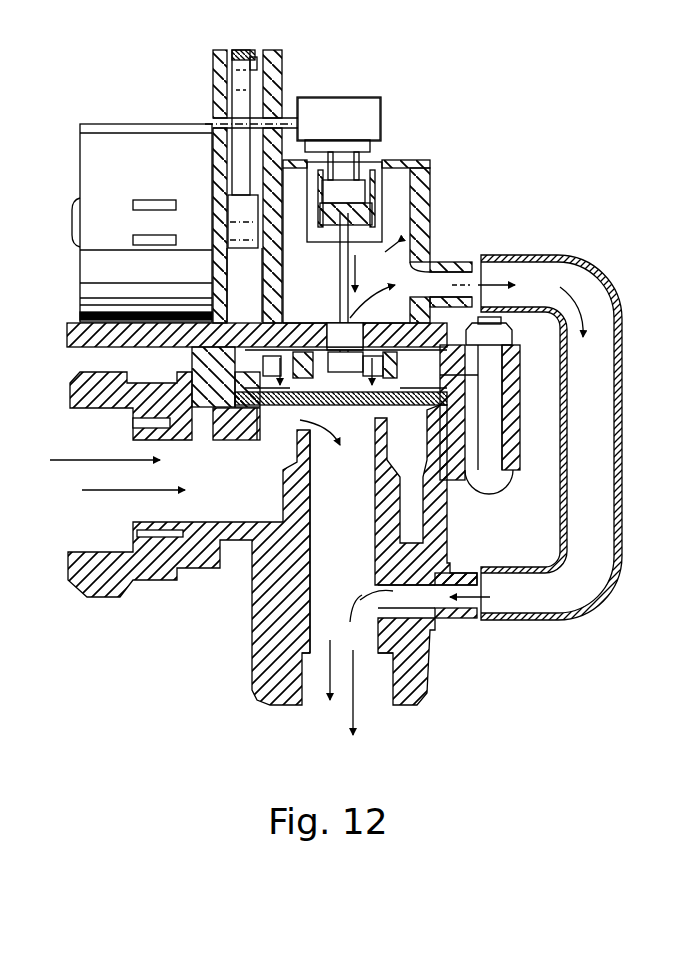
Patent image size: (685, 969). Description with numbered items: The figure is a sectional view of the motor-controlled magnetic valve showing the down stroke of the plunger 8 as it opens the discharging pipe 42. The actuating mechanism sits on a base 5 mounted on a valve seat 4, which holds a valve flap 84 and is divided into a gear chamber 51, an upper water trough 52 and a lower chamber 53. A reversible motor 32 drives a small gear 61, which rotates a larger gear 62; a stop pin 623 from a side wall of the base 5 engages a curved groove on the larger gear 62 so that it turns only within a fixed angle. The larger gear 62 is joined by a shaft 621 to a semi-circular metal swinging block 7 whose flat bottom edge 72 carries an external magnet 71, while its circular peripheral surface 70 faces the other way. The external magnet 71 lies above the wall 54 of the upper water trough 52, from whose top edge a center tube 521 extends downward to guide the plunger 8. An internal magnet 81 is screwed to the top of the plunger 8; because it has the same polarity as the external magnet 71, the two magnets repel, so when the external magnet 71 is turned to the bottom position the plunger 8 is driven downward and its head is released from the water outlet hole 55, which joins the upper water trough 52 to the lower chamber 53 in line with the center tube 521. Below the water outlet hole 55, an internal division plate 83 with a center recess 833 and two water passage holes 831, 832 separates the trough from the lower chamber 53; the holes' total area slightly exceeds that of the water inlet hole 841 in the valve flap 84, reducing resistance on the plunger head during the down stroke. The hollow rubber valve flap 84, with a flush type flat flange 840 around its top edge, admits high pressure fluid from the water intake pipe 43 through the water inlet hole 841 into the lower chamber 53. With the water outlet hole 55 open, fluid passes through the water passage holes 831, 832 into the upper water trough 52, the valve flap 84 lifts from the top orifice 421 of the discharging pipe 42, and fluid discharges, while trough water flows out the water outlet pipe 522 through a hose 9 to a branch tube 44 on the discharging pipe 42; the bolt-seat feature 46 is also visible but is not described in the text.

The motor 32 is at (110, 153).
The small gear 61 is at (205, 197).
The larger gear 62 is at (238, 83).
The stop pin 623 is at (256, 52).
The gear chamber 51 is at (290, 62).
The shaft 621 is at (332, 108).
The circular peripheral surface 70 is at (348, 100).
The swinging block 7 is at (383, 102).
The flat bottom edge 72 is at (370, 147).
The external magnet 71 is at (360, 152).
The wall 54 is at (397, 160).
The center tube 521 is at (382, 213).
The internal magnet 81 is at (350, 188).
The plunger 8 is at (336, 266).
The water outlet hole 55 is at (335, 318).
The upper water trough 52 is at (432, 235).
The water outlet pipe 522 is at (468, 262).
The hose 9 is at (604, 430).
The water passage hole 831 is at (240, 352).
The water passage hole 832 is at (200, 364).
The water intake pipe 43 is at (175, 520).
The valve seat 4 is at (512, 457).
The base 5 is at (513, 357).
The bolt seat 46 is at (485, 457).
The lower chamber 53 is at (445, 375).
The branch tube 44 is at (443, 598).
The discharging pipe 42 is at (318, 635).
The top orifice 421 is at (313, 450).
The water inlet hole 841 is at (270, 432).
The flush type flat flange 840 is at (403, 405).
The center recess 833 is at (350, 380).
The valve flap 84 is at (303, 387).
The internal division plate 83 is at (380, 378).